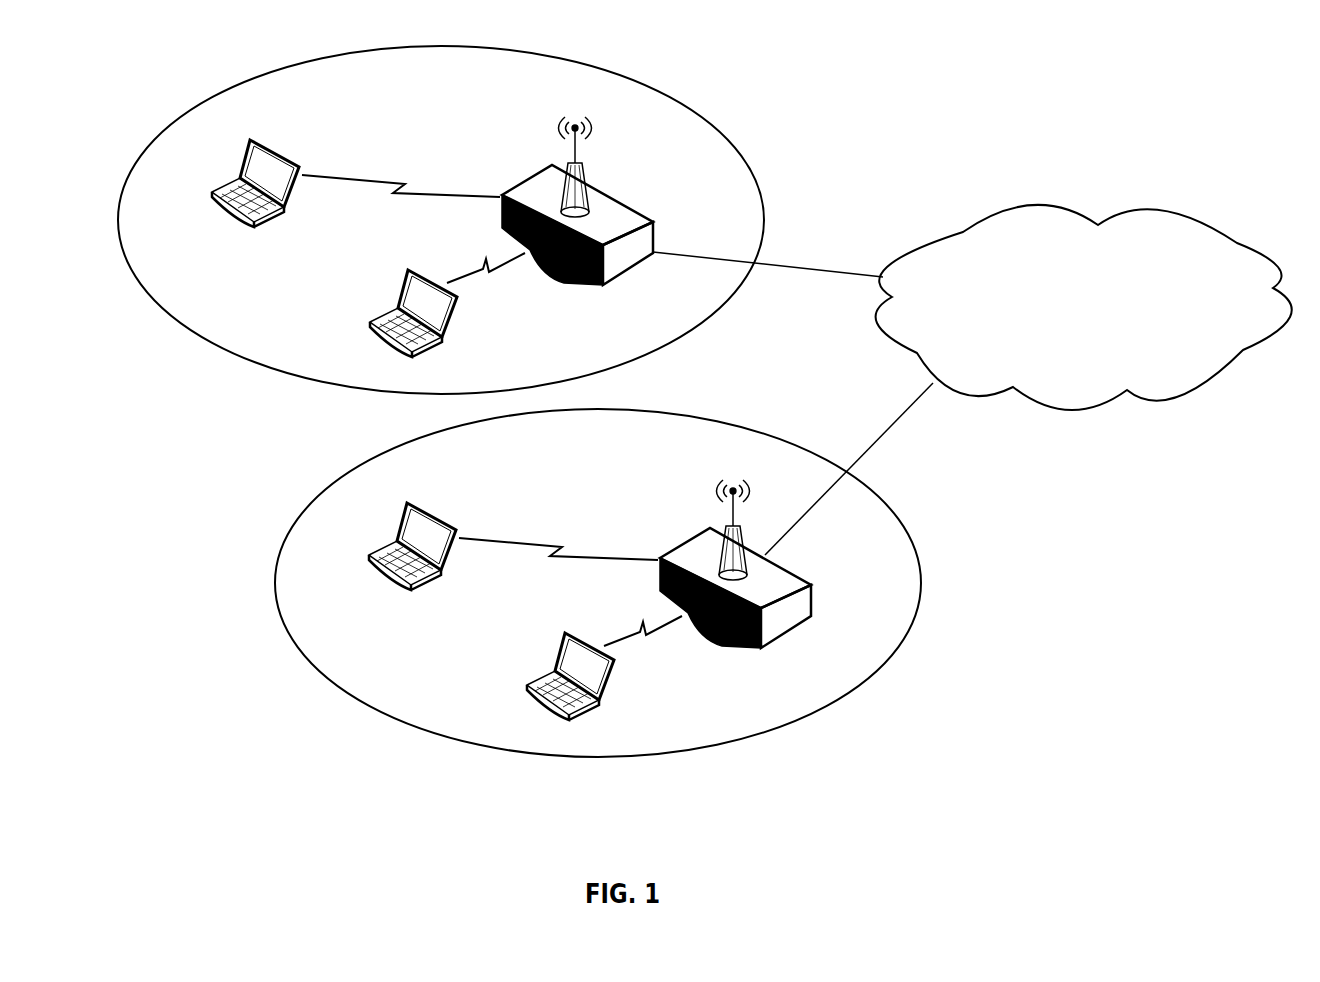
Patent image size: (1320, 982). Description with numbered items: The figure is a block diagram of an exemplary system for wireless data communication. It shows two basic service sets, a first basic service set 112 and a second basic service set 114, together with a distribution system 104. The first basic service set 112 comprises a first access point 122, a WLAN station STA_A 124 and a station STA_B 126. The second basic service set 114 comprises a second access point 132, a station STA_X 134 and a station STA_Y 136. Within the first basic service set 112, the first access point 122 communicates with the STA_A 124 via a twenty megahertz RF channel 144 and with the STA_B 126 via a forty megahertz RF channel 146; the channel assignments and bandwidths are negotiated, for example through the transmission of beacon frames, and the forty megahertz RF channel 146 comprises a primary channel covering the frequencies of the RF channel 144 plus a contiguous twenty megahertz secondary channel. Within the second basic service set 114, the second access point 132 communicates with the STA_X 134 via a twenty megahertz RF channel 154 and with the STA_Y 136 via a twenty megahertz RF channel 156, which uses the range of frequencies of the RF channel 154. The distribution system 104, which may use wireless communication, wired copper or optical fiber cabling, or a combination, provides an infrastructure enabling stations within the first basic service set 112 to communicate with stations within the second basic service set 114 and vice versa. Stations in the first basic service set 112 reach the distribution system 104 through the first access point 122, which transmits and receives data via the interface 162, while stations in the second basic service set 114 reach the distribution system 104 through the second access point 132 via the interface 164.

The distribution system 104 is at (1037, 203).
The BSS_1 112 is at (675, 100).
The BSS_2 114 is at (910, 532).
The AP_1 122 is at (523, 180).
The STA_A 124 is at (236, 146).
The STA_B 126 is at (398, 278).
The AP_2 132 is at (680, 543).
The STA_X 134 is at (393, 509).
The STA_Y 136 is at (555, 641).
The 20 MHz RF channel 144 is at (378, 178).
The 40 MHz RF channel 146 is at (469, 263).
The 20 MHz RF channel 154 is at (535, 541).
The 20 MHz RF channel 156 is at (626, 626).
The interface 162 is at (820, 266).
The interface 164 is at (888, 428).